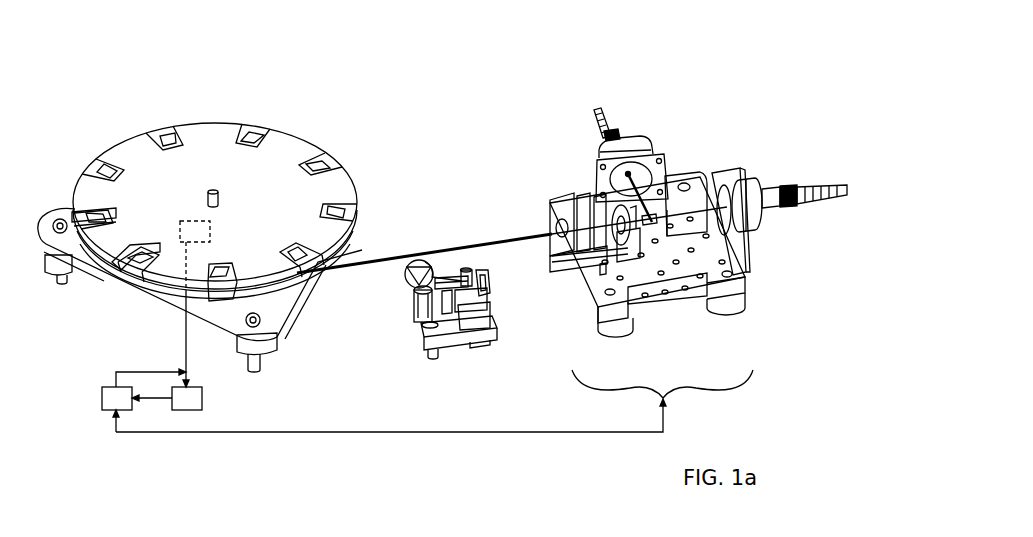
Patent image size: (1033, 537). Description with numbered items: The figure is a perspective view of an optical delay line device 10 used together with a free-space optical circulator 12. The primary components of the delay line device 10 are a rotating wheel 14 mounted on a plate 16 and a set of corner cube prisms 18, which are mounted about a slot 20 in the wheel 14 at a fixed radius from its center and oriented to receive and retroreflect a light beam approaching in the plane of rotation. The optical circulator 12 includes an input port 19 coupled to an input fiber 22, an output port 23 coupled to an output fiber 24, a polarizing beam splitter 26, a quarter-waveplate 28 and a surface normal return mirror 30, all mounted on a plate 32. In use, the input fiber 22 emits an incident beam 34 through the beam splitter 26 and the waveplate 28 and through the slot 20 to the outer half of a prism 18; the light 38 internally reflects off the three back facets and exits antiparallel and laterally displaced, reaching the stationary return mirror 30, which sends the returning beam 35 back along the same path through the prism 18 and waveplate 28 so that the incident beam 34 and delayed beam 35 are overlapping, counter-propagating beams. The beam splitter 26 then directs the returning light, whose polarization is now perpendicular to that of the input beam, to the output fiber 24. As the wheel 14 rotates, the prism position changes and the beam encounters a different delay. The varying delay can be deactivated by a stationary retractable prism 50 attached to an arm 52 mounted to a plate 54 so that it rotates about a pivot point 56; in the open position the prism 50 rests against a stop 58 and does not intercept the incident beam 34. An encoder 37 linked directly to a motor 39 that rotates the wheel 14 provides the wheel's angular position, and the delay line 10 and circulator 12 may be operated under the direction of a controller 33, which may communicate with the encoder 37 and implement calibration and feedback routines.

The optical delay line device 10 is at (284, 118).
The optical circulator 12 is at (658, 301).
The rotating wheel 14 is at (212, 122).
The plate 16 is at (92, 277).
The corner cube prisms 18 is at (173, 137).
The input port 19 is at (757, 226).
The slot 20 is at (149, 284).
The input fiber 22 is at (838, 187).
The output port 23 is at (652, 152).
The output fiber 24 is at (603, 106).
The polarizing beam splitter 26 is at (688, 255).
The quarter-waveplate 28 is at (630, 250).
The surface normal return mirror 30 is at (566, 192).
The plate 32 is at (590, 305).
The controller 33 is at (427, 401).
The incident beam 34 is at (701, 178).
The returning delayed beam 35 is at (633, 176).
The encoder 37 is at (159, 389).
The emerging beam 38 is at (384, 259).
The motor 39 is at (195, 304).
The stationary retractable prism 50 is at (406, 280).
The arm 52 is at (448, 280).
The plate 54 is at (455, 342).
The pivot point 56 is at (474, 275).
The stop 58 is at (421, 308).